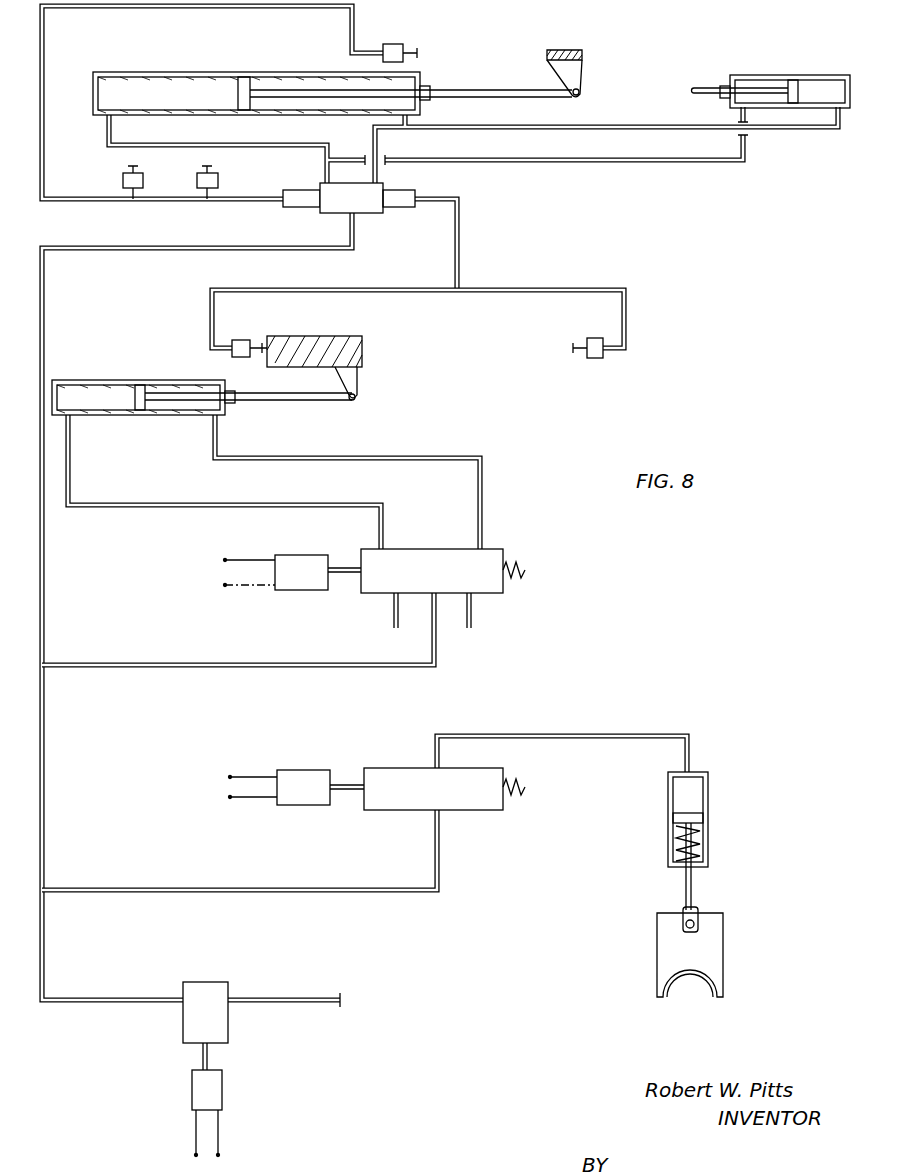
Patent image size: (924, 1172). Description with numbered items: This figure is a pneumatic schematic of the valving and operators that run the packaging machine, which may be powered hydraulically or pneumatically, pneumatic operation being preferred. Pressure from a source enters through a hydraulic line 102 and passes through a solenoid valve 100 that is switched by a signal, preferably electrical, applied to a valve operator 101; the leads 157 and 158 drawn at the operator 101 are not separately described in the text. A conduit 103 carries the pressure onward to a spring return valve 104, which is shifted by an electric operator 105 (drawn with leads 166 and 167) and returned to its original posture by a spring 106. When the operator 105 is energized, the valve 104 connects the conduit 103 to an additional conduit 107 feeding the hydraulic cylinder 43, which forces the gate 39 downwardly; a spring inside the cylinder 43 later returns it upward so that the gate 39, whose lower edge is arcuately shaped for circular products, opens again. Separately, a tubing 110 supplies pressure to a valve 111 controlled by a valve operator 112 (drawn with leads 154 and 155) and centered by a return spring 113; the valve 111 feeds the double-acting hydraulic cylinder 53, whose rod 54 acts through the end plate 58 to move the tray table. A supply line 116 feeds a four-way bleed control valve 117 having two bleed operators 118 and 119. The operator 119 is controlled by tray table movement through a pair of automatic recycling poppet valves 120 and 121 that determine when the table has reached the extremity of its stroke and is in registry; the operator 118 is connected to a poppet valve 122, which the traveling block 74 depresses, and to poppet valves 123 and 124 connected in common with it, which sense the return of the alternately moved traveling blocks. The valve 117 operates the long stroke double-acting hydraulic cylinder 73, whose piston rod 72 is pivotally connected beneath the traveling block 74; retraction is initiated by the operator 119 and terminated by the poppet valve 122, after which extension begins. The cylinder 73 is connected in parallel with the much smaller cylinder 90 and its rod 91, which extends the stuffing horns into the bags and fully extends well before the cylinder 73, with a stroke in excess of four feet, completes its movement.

The gate 39 is at (725, 925).
The hydraulic cylinder 43 is at (710, 790).
The double-acting hydraulic cylinder 53 is at (98, 378).
The piston rod 54 is at (290, 410).
The end plate 58 is at (368, 350).
The piston rod 72 is at (482, 84).
The long stroke hydraulic cylinder 73 is at (174, 70).
The traveling block 74 is at (572, 47).
The cylinder 90 is at (812, 73).
The piston rod 91 is at (712, 82).
The solenoid valve 100 is at (230, 1032).
The valve operator 101 is at (223, 1100).
The hydraulic line 102 is at (300, 998).
The conduit 103 is at (440, 868).
The spring return valve 104 is at (392, 765).
The electric operator 105 is at (305, 768).
The spring 106 is at (525, 785).
The additional conduit 107 is at (570, 733).
The tubing 110 is at (218, 662).
The valve 111 is at (497, 547).
The valve operator 112 is at (300, 553).
The return spring 113 is at (522, 576).
The supply line 116 is at (122, 250).
The four-way bleed control valve 117 is at (368, 214).
The bleed operator 118 is at (300, 188).
The bleed operator 119 is at (412, 183).
The automatic recycling poppet valve 120 is at (245, 338).
The automatic recycling poppet valve 121 is at (595, 360).
The poppet valve 122 is at (396, 43).
The poppet valve 123 is at (120, 180).
The poppet valve 124 is at (195, 182).
The lead 154 is at (240, 557).
The lead 155 is at (240, 583).
The lead 157 is at (194, 1145).
The lead 158 is at (220, 1145).
The lead 166 is at (248, 775).
The lead 167 is at (238, 803).